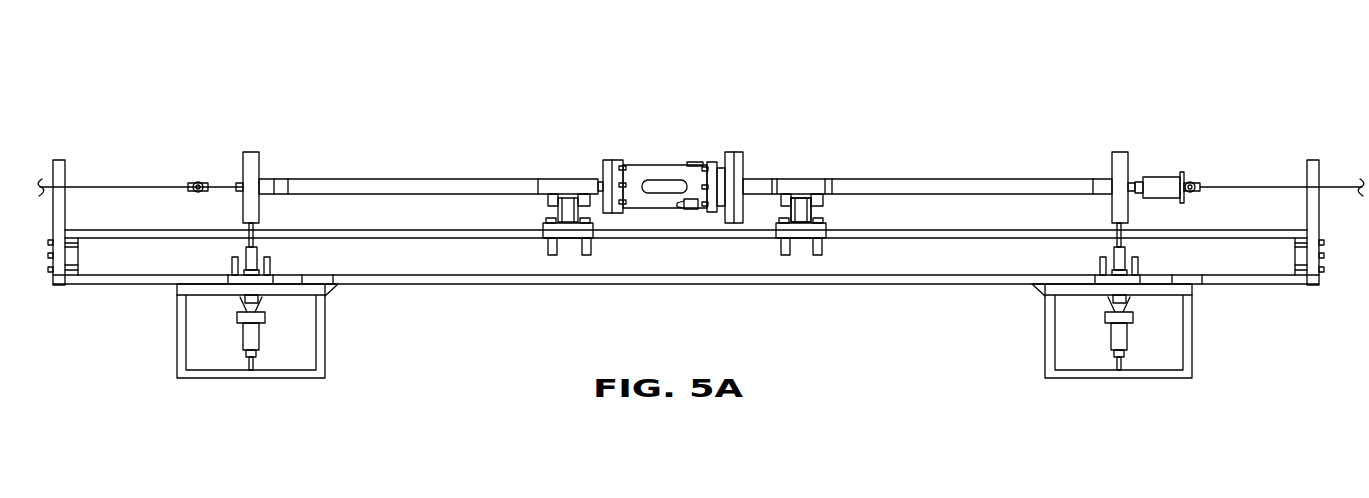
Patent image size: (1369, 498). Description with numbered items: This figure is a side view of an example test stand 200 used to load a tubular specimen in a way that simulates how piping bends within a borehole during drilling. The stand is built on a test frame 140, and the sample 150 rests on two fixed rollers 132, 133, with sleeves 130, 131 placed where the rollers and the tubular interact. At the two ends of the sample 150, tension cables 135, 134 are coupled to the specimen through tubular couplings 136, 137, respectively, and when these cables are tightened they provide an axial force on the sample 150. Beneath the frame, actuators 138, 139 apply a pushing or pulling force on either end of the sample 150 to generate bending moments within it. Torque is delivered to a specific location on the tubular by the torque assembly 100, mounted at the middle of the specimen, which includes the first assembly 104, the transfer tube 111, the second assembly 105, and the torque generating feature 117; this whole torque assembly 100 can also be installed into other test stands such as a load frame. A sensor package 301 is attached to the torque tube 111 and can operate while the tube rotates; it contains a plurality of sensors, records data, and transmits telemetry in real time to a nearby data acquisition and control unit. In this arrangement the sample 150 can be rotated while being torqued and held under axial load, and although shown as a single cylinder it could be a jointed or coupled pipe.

The test stand 200 is at (886, 86).
The torque assembly 100 is at (633, 170).
The first assembly 104 is at (612, 160).
The second assembly 105 is at (712, 165).
The transfer tube 111 is at (665, 180).
The torque generating feature 117 is at (744, 168).
The sleeve 130 is at (558, 180).
The sleeve 131 is at (800, 182).
The fixed roller 132 is at (570, 200).
The fixed roller 133 is at (805, 200).
The tension cable 134 is at (1255, 185).
The tension cable 135 is at (127, 185).
The tubular coupling 136 is at (250, 160).
The tubular coupling 137 is at (1120, 160).
The actuator 138 is at (241, 337).
The actuator 139 is at (1130, 337).
The test frame 140 is at (397, 240).
The sample 150 is at (962, 182).
The sensor package 301 is at (695, 163).